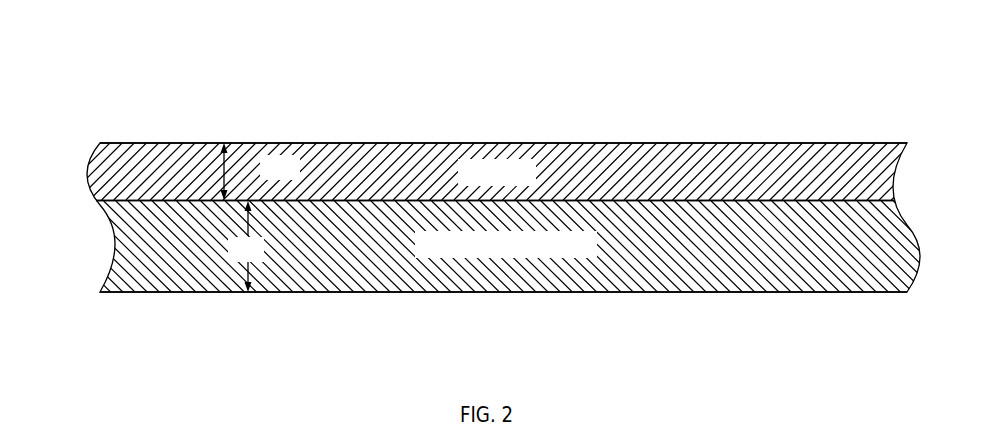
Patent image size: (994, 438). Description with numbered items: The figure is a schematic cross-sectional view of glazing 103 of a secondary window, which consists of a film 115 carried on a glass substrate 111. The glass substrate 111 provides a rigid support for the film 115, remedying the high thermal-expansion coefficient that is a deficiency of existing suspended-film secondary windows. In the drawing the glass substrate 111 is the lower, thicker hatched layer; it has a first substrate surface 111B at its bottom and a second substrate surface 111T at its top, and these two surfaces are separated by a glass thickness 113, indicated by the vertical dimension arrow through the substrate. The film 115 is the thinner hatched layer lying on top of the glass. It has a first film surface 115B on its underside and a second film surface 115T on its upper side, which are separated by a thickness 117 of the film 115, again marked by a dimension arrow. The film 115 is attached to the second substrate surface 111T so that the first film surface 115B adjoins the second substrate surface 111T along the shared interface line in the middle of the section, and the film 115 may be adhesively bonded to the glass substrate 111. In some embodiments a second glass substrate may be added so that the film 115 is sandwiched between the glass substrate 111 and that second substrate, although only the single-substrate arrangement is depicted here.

The glazing 103 is at (689, 67).
The glass substrate 111 is at (592, 256).
The second substrate surface 111T is at (133, 191).
The first substrate surface 111B is at (122, 301).
The glass thickness 113 is at (246, 246).
The film 115 is at (532, 184).
The second film surface 115T is at (133, 134).
The first film surface 115B is at (122, 211).
The thickness 117 is at (226, 170).